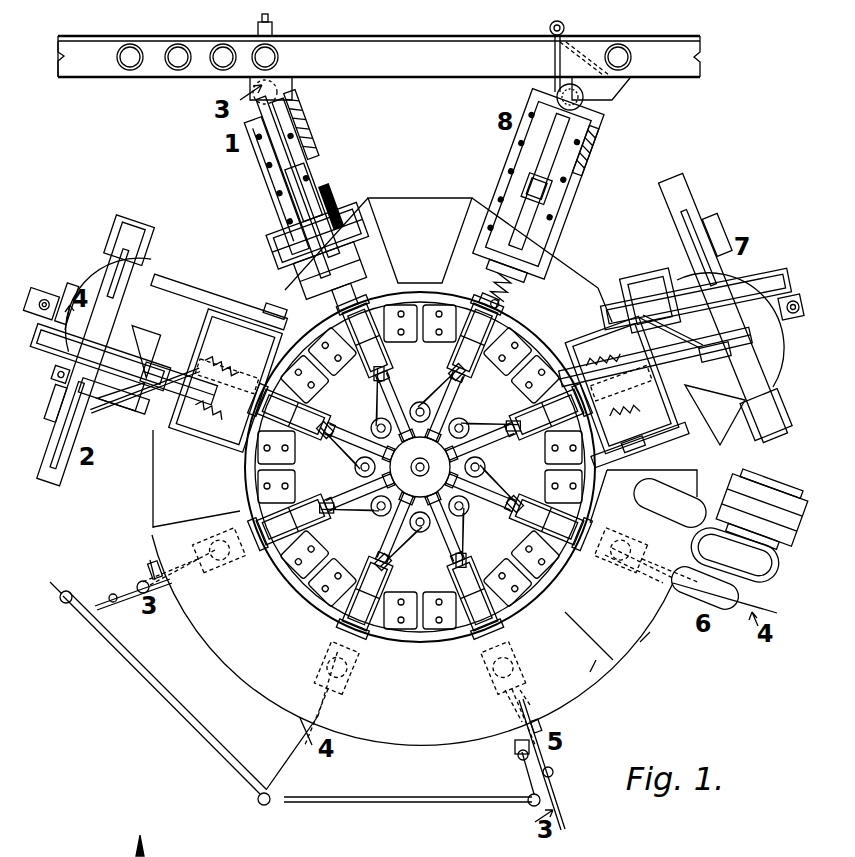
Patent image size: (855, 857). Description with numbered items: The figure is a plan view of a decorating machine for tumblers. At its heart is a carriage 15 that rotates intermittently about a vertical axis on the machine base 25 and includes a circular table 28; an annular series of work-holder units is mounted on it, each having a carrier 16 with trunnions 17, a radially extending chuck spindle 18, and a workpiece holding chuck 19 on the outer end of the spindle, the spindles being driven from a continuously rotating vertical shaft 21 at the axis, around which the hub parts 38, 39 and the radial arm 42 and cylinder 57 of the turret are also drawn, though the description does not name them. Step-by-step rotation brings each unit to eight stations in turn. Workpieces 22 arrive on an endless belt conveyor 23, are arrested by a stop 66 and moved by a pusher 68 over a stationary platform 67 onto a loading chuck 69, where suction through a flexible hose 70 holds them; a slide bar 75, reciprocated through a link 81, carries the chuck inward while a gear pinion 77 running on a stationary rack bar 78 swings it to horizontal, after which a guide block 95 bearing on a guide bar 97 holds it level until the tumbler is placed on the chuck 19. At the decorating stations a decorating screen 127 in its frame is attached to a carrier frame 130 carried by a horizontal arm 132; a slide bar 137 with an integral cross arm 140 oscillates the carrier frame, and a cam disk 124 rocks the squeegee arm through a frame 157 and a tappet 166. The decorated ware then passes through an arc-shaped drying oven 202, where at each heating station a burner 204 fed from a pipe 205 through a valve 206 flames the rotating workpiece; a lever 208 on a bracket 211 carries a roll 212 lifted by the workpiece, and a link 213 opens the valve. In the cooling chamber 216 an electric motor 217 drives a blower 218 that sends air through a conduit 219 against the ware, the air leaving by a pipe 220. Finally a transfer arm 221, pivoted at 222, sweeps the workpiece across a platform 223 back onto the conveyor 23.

The carriage 15 is at (145, 494).
The carrier 16 is at (517, 432).
The trunnions 17 is at (461, 564).
The chuck spindle 18 is at (460, 370).
The workpiece holding chuck 19 is at (504, 292).
The vertical shaft 21 is at (420, 467).
The workpieces 22 is at (170, 70).
The endless belt conveyor 23 is at (394, 44).
The machine base 25 is at (599, 672).
The circular table 28 is at (432, 270).
The hub shaft 38 is at (422, 479).
The hub bearing 39 is at (412, 462).
The radial arm 42 is at (323, 507).
The cylinder 57 is at (380, 370).
The stop 66 is at (286, 53).
The stationary platform 67 is at (296, 88).
The pusher 68 is at (258, 30).
The loading chuck 69 is at (583, 100).
The flexible hose 70 is at (324, 175).
The slide bar 75 is at (566, 191).
The gear pinion 77 is at (349, 200).
The stationary rack bar 78 is at (319, 117).
The link 81 is at (562, 194).
The guide block 95 is at (298, 213).
The guide bar 97 is at (259, 192).
The cam disk 124 is at (100, 302).
The decorating screen 127 is at (235, 376).
The carrier frame 130 is at (221, 295).
The horizontal arm 132 is at (51, 290).
The slide bar 137 is at (103, 342).
The cross arm 140 is at (91, 370).
The frame 157 is at (134, 326).
The tappet 166 is at (165, 364).
The drying oven 202 is at (240, 668).
The burner 204 is at (503, 695).
The pipe 205 is at (464, 801).
The valve 206 is at (518, 749).
The lever 208 is at (525, 708).
The bracket 211 is at (539, 730).
The roll 212 is at (502, 688).
The link 213 is at (554, 772).
The cooling chamber 216 is at (646, 640).
The electric motor 217 is at (771, 500).
The blower 218 is at (771, 580).
The conduit 219 is at (683, 600).
The pipe 220 is at (670, 506).
The transfer arm 221 is at (556, 50).
The pivot 222 is at (565, 27).
The platform 223 is at (610, 91).